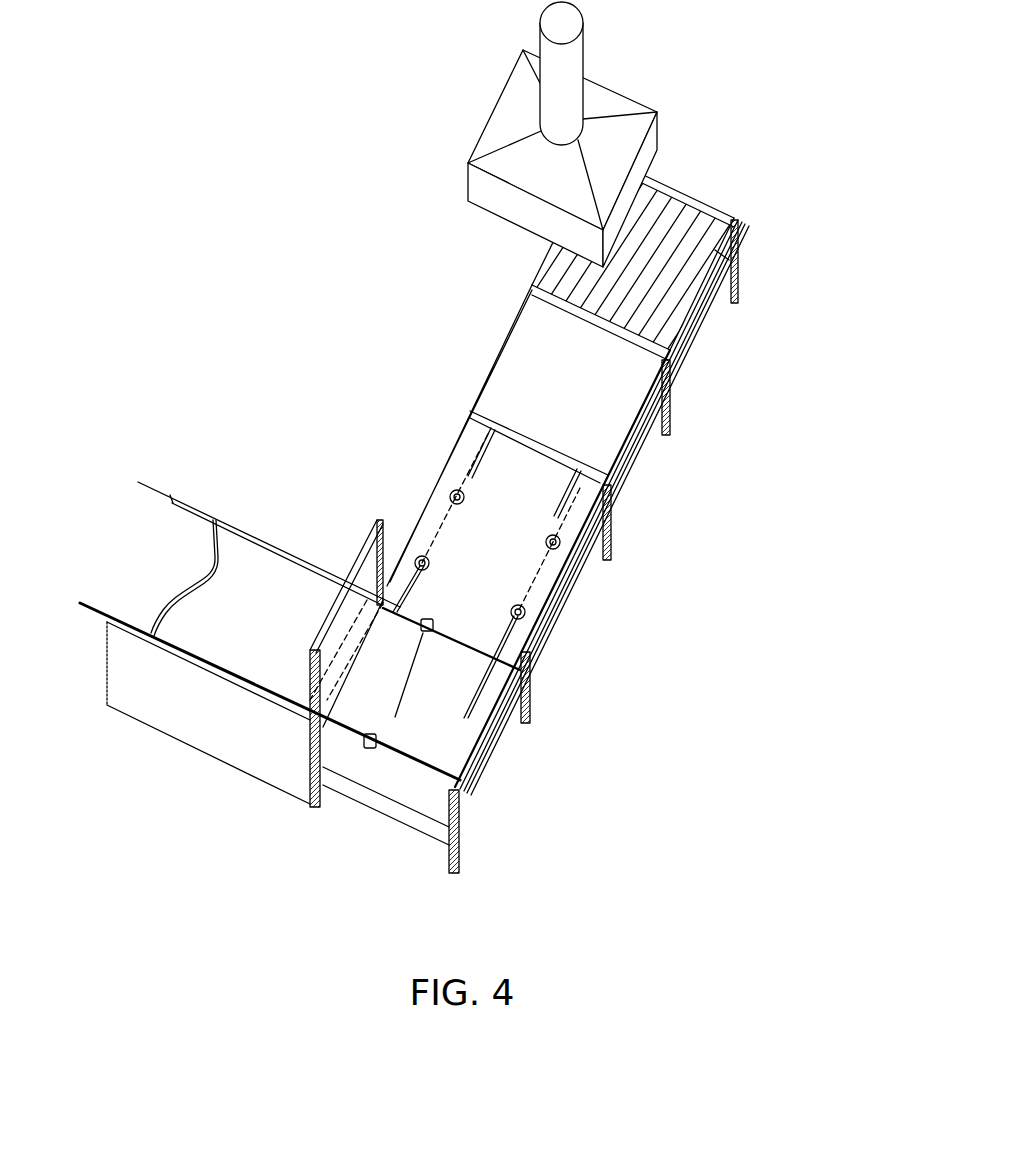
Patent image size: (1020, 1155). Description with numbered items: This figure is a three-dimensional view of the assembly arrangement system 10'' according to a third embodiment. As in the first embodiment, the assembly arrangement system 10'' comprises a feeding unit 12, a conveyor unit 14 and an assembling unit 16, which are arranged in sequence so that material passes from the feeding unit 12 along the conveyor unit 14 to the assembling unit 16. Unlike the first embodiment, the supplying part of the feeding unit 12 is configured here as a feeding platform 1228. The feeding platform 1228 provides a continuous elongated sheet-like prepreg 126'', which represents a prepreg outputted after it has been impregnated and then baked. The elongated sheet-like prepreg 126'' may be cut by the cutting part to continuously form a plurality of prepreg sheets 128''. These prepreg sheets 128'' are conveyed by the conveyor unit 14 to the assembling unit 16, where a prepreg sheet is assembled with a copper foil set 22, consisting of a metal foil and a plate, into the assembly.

The assembly arrangement system 10'' is at (428, 516).
The feeding unit 12 is at (207, 779).
The conveyor unit 14 is at (503, 880).
The assembling unit 16 is at (661, 570).
The copper foil set 22 is at (687, 220).
The elongated sheet-like prepreg 126'' is at (270, 686).
The prepreg sheets 128'' is at (445, 567).
The feeding platform 1228 is at (187, 500).